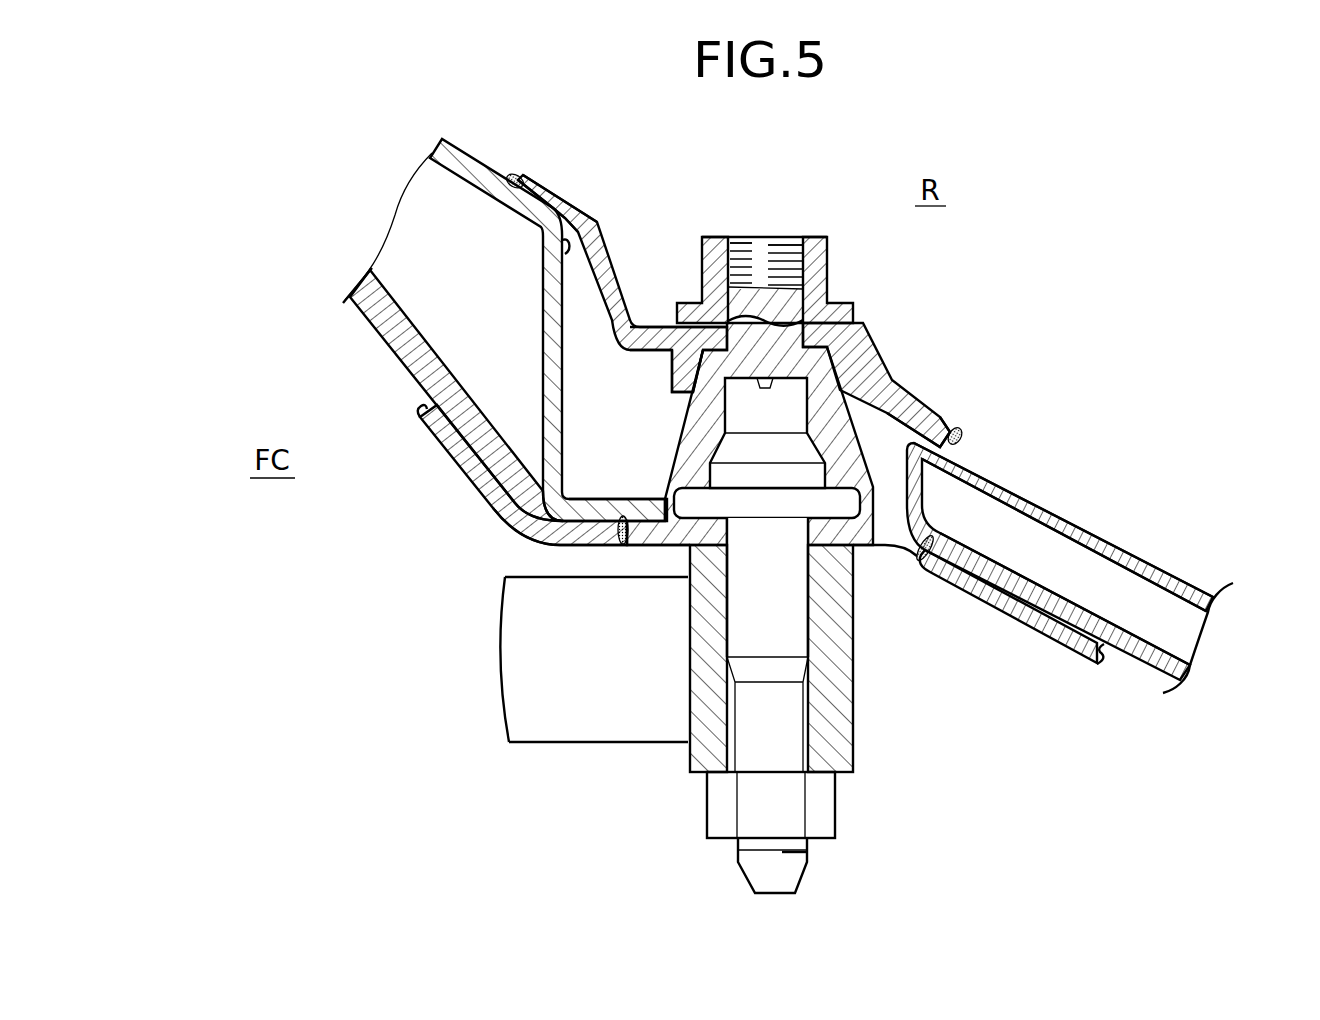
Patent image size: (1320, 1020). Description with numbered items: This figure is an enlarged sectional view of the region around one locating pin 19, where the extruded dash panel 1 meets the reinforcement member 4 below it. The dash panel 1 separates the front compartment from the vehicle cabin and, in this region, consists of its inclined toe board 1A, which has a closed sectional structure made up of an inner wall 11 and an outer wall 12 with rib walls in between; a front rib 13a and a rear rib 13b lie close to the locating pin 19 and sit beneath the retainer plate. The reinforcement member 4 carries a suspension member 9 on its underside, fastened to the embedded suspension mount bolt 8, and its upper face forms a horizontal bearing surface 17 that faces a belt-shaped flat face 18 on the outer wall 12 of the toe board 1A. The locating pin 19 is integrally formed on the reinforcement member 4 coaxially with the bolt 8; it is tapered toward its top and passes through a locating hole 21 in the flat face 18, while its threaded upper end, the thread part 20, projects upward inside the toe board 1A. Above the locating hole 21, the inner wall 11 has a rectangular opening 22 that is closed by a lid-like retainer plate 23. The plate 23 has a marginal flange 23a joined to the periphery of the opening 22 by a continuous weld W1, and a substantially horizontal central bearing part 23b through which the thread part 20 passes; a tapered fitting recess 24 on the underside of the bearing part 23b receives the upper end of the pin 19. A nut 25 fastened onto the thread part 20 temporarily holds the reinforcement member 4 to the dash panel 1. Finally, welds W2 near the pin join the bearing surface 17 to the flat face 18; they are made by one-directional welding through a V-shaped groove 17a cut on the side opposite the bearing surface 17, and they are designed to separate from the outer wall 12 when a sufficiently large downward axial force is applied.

The dash panel 1 is at (462, 150).
The toe board 1A is at (1097, 520).
The reinforcement member 4 is at (490, 512).
The suspension mount bolt 8 is at (792, 638).
The suspension member 9 is at (593, 745).
The inner wall 11 is at (1133, 542).
The outer wall 12 is at (1137, 660).
The front rib 13a is at (546, 320).
The rear rib 13b is at (900, 479).
The bearing surface 17 is at (537, 540).
The V-shaped groove 17a is at (615, 550).
The flat face 18 is at (598, 497).
The locating pin 19 is at (855, 420).
The thread part 20 is at (762, 290).
The locating hole 21 is at (665, 495).
The opening 22 is at (565, 247).
The retainer plate 23 is at (607, 226).
The marginal flange 23a is at (546, 190).
The bearing part 23b is at (643, 325).
The tapered fitting recess 24 is at (691, 402).
The nut 25 is at (710, 237).
The continuous weld W1 is at (515, 175).
The weld W2 is at (628, 550).